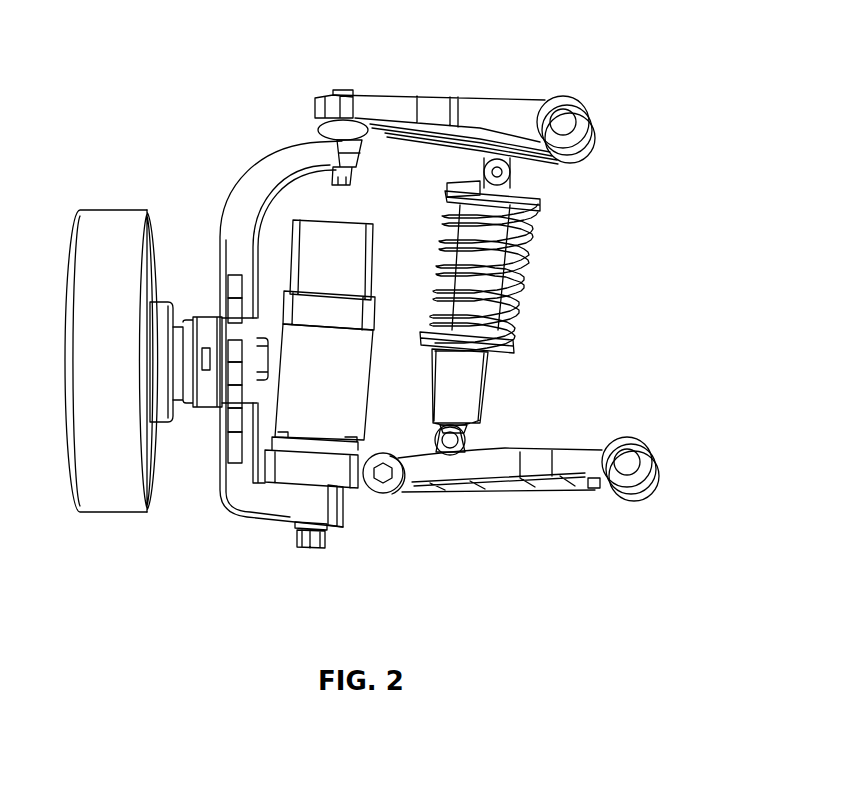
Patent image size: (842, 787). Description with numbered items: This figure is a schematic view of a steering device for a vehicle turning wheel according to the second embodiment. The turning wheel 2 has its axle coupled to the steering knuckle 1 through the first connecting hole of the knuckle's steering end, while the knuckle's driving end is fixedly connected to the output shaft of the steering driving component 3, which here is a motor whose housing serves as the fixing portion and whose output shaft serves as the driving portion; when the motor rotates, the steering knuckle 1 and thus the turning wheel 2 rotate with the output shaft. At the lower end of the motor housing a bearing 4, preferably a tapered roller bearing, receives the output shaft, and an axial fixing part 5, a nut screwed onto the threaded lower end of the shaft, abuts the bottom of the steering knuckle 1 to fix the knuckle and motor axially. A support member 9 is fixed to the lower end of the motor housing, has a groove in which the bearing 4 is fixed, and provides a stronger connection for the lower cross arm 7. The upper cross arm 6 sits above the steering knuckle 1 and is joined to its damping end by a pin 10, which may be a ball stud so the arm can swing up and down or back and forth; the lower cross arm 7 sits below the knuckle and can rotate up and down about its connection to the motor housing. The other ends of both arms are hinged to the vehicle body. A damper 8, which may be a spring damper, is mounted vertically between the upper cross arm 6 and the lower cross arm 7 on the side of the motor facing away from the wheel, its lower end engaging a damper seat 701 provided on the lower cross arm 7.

The steering knuckle 1 is at (238, 221).
The turning wheel 2 is at (117, 221).
The steering driving component 3 is at (313, 241).
The bearing 4 is at (331, 505).
The axial fixing part 5 is at (290, 558).
The upper cross arm 6 is at (404, 105).
The lower cross arm 7 is at (570, 475).
The damper 8 is at (476, 236).
The support member 9 is at (297, 474).
The pin 10 is at (350, 121).
The damper seat 701 is at (443, 467).